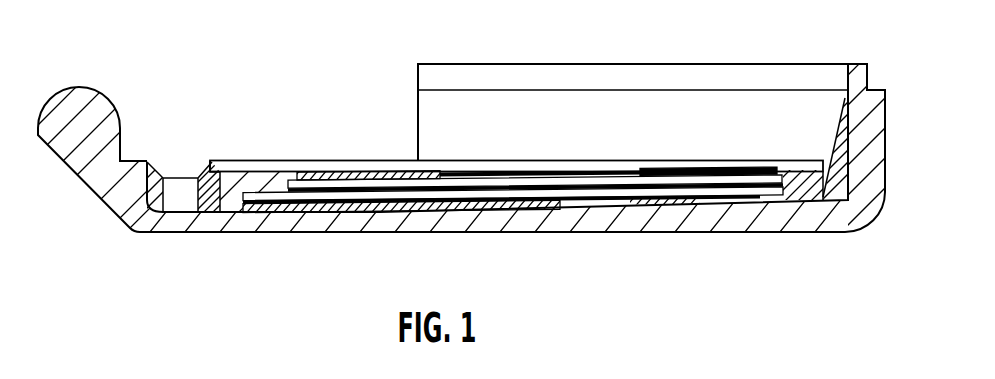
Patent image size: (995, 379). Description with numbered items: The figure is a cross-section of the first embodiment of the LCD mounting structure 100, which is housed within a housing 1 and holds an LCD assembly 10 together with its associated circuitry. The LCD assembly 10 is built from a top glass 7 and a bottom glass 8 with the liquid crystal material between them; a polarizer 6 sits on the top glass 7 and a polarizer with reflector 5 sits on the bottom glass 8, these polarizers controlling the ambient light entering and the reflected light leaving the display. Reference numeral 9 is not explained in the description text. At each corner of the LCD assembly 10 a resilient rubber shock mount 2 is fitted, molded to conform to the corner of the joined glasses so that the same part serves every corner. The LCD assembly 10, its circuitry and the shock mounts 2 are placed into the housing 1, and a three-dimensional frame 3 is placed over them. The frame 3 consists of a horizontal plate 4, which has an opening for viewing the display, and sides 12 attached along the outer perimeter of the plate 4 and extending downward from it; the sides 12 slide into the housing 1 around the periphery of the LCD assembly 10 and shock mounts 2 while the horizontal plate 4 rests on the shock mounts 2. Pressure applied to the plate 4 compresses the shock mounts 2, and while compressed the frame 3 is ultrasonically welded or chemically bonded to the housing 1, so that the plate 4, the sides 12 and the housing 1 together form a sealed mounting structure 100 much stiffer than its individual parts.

The LCD mounting structure 100 is at (497, 159).
The housing 1 is at (90, 84).
The shock mounts 2 is at (237, 205).
The three-dimensional frame 3 is at (155, 162).
The horizontal plate 4 is at (223, 162).
The polarizer with reflector 5 is at (559, 214).
The polarizer 6 is at (336, 166).
The top glass 7 is at (470, 184).
The bottom glass 8 is at (523, 194).
The reflector layer 9 is at (397, 197).
The LCD assembly 10 is at (768, 171).
The sides 12 is at (207, 200).